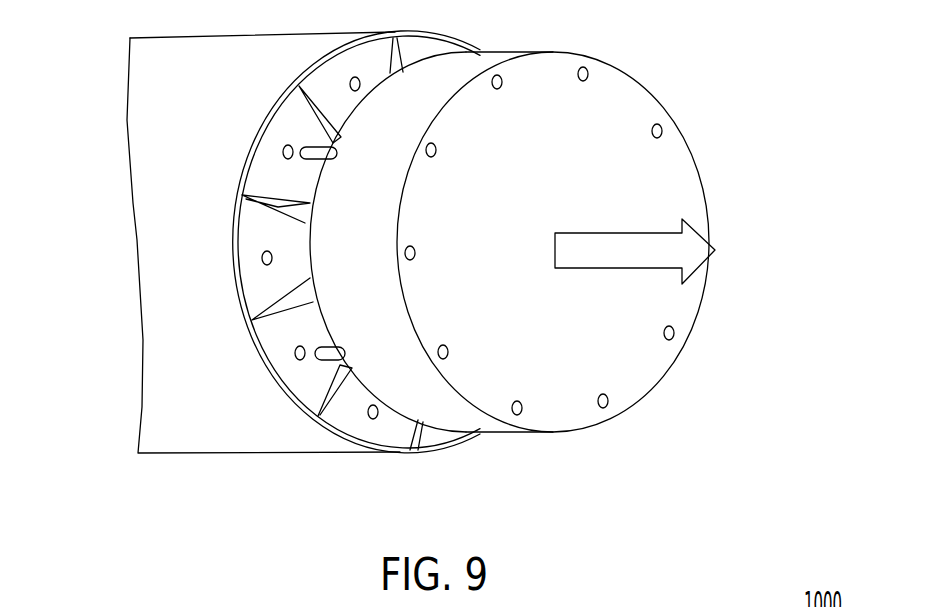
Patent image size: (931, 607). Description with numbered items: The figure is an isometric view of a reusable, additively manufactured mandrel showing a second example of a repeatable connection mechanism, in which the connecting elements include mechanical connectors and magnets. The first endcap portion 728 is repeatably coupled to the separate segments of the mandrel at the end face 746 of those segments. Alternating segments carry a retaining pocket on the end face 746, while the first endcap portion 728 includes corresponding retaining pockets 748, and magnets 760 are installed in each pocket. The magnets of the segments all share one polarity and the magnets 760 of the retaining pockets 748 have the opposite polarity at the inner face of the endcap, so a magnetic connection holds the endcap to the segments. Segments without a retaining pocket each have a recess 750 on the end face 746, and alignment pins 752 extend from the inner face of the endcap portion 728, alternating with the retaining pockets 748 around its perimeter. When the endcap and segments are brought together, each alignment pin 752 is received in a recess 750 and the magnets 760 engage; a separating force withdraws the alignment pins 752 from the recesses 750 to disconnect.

The first endcap portion 728 is at (640, 365).
The end face 746 is at (407, 438).
The retaining pockets 748 is at (607, 405).
The recess 750 is at (297, 360).
The alignment pins 752 is at (325, 355).
The magnets 760 is at (675, 330).